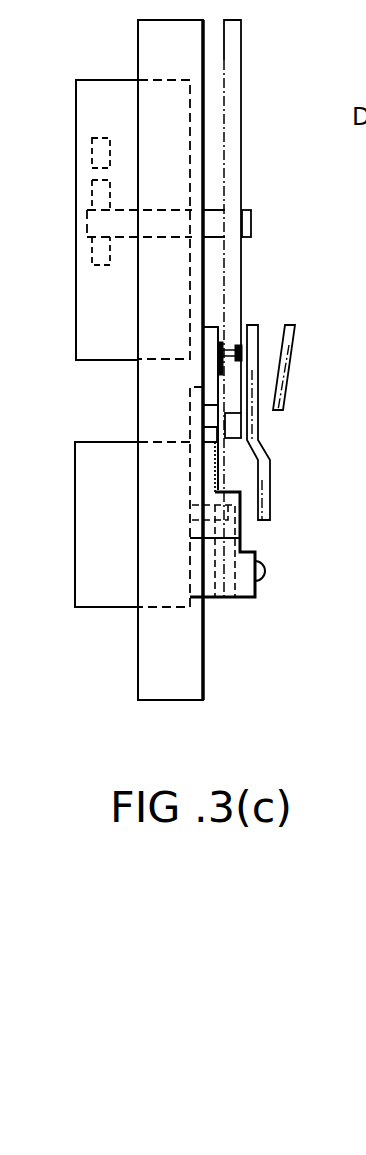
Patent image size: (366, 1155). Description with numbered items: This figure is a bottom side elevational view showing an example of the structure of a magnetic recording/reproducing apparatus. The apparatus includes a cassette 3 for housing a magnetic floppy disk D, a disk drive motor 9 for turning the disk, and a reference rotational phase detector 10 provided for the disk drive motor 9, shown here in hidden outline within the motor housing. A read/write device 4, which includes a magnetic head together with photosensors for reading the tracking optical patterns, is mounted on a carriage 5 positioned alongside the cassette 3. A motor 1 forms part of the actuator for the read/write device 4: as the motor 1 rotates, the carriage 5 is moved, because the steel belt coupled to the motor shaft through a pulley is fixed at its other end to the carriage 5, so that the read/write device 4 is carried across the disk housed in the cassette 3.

The motor 1 is at (101, 455).
The cassette 3 is at (242, 115).
The read/write device 4 is at (237, 345).
The carriage 5 is at (255, 323).
The disk drive motor 9 is at (93, 79).
The reference rotational phase detector 10 is at (92, 152).